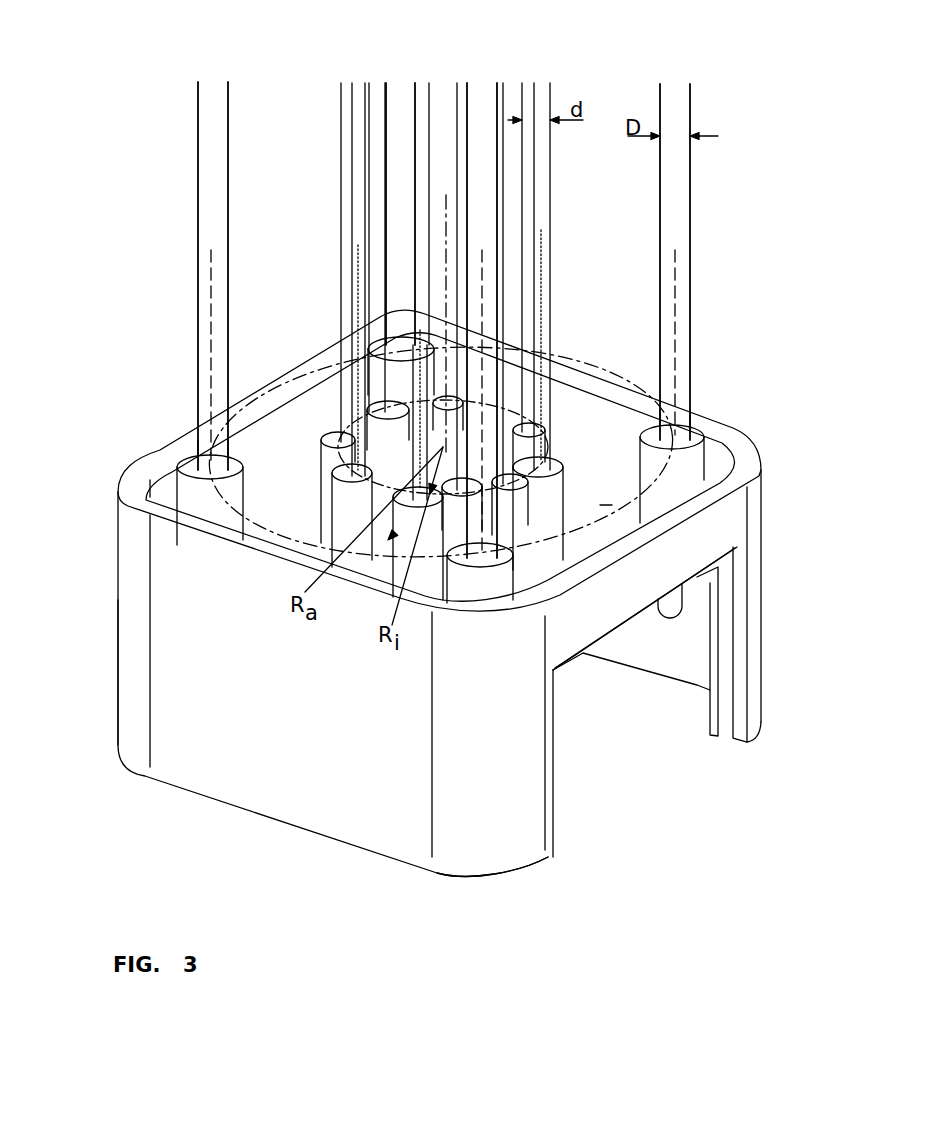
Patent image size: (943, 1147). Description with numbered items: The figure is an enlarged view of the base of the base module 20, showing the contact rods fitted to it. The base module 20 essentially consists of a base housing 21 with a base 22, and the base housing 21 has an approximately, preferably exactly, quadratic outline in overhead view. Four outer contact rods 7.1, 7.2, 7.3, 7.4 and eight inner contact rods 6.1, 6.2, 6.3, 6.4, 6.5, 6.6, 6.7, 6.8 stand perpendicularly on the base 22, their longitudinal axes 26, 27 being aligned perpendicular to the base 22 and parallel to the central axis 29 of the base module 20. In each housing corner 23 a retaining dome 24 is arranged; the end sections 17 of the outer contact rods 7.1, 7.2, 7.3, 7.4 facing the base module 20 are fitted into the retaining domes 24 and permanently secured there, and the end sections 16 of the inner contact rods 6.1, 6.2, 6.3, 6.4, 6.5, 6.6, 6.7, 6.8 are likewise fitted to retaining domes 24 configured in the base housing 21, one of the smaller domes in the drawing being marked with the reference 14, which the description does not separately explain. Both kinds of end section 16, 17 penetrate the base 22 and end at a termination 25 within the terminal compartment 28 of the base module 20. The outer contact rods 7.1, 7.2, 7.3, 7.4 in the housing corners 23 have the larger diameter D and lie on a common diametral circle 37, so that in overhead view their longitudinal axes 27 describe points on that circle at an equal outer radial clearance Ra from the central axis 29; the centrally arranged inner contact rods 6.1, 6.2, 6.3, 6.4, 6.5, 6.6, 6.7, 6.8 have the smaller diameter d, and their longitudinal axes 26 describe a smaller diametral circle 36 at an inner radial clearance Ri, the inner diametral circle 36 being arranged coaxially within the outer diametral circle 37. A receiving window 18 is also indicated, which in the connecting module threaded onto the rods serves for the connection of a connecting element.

The outer contact rod 7.1 is at (213, 88).
The outer contact rod 7.2 is at (406, 92).
The outer contact rod 7.3 is at (675, 88).
The outer contact rod 7.4 is at (485, 92).
The inner contact rod 6.1 is at (357, 133).
The inner contact rod 6.2 is at (346, 98).
The inner contact rod 6.3 is at (392, 97).
The inner contact rod 6.4 is at (463, 95).
The inner contact rod 6.5 is at (529, 88).
The inner contact rod 6.6 is at (540, 88).
The inner contact rod 6.7 is at (504, 92).
The inner contact rod 6.8 is at (426, 85).
The cylindrical boss 14 is at (553, 463).
The end section of inner contact rod 16 is at (542, 423).
The end section of outer contact rod 17 is at (200, 425).
The receiving window 18 is at (553, 788).
The base module 20 is at (178, 617).
The base housing 21 is at (117, 695).
The base 22 is at (595, 490).
The housing corner 23 is at (160, 492).
The retaining dome 24 is at (190, 467).
The termination 25 is at (682, 600).
The longitudinal axis of inner contact rod 26 is at (357, 258).
The longitudinal axis of outer contact rod 27 is at (207, 290).
The terminal compartment 28 is at (573, 690).
The central axis 29 is at (447, 203).
The diametral circle of inner contact rods 36 is at (272, 367).
The diametral circle of outer contact rods 37 is at (613, 505).